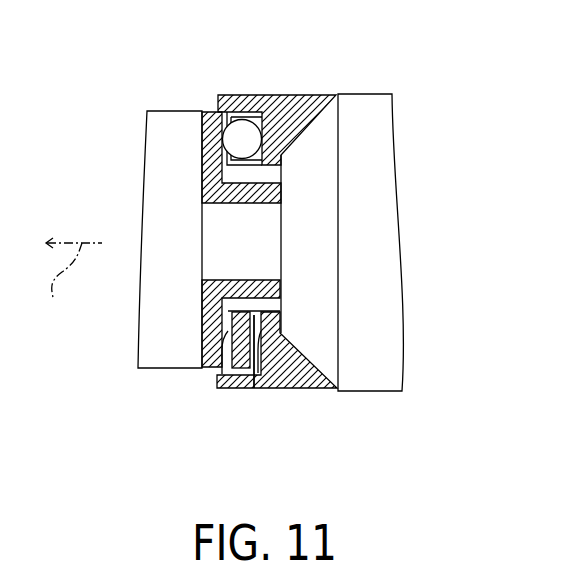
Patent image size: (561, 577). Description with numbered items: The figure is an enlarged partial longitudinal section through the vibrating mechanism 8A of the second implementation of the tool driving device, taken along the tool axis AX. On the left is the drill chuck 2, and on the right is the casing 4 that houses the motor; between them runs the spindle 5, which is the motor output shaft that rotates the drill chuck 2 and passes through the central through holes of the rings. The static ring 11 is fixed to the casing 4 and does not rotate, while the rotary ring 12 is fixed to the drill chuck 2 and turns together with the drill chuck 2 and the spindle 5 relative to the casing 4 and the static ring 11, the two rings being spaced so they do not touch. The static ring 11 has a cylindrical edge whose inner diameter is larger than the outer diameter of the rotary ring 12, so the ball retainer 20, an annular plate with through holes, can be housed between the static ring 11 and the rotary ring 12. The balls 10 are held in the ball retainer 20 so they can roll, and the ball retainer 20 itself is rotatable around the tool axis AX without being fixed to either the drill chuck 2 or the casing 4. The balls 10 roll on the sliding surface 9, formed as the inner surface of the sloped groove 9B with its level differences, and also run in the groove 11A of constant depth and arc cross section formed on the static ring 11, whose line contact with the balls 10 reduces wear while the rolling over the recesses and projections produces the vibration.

The drill chuck 2 is at (160, 369).
The casing 4 is at (367, 392).
The spindle 5 is at (215, 228).
The vibrating mechanism 8A is at (305, 88).
The sliding surface 9 is at (226, 136).
The groove 9B is at (229, 372).
The balls 10 is at (247, 133).
The static ring 11 is at (292, 388).
The groove 11A is at (254, 388).
The rotary ring 12 is at (207, 369).
The ball retainer 20 is at (230, 330).
The tool axis AX is at (66, 285).